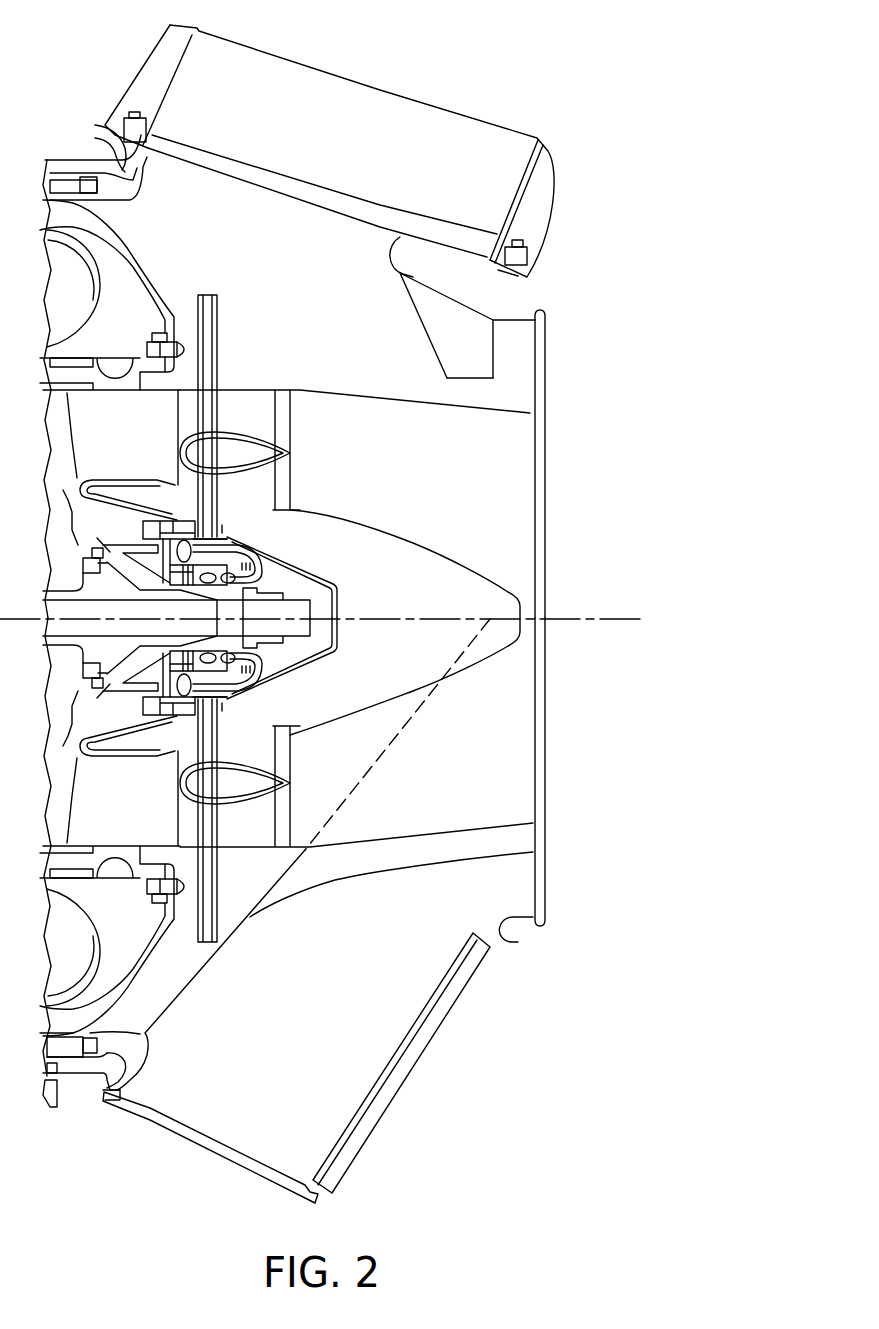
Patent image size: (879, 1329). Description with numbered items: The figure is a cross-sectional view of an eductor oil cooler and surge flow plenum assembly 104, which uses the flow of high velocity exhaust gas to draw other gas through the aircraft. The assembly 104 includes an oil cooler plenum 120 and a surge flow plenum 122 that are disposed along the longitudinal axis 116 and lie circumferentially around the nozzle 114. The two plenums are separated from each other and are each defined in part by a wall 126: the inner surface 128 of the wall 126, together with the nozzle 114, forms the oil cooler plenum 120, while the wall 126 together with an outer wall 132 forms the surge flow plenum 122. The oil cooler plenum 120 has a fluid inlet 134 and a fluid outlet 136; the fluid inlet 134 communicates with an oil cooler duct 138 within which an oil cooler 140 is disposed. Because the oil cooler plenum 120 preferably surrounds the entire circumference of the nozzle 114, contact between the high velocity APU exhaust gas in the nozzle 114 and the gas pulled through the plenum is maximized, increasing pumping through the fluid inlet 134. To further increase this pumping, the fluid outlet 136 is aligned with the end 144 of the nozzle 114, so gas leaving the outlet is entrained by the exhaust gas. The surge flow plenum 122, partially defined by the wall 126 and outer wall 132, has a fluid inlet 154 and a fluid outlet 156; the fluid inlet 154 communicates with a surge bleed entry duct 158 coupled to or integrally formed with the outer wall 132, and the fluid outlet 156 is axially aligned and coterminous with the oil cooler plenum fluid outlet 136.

The eductor oil cooler and surge flow plenum assembly 104 is at (439, 1063).
The nozzle 114 is at (484, 414).
The longitudinal axis 116 is at (613, 620).
The oil cooler plenum 120 is at (513, 396).
The surge flow plenum 122 is at (495, 318).
The wall 126 is at (403, 290).
The inner surface 128 is at (463, 377).
The outer wall 132 is at (390, 262).
The fluid inlet 134 is at (245, 182).
The fluid outlet 136 is at (547, 363).
The oil cooler duct 138 is at (130, 162).
The oil cooler 140 is at (348, 151).
The end of the nozzle 144 is at (527, 737).
The fluid inlet 154 is at (248, 1118).
The fluid outlet 156 is at (510, 898).
The surge bleed entry duct 158 is at (457, 1067).